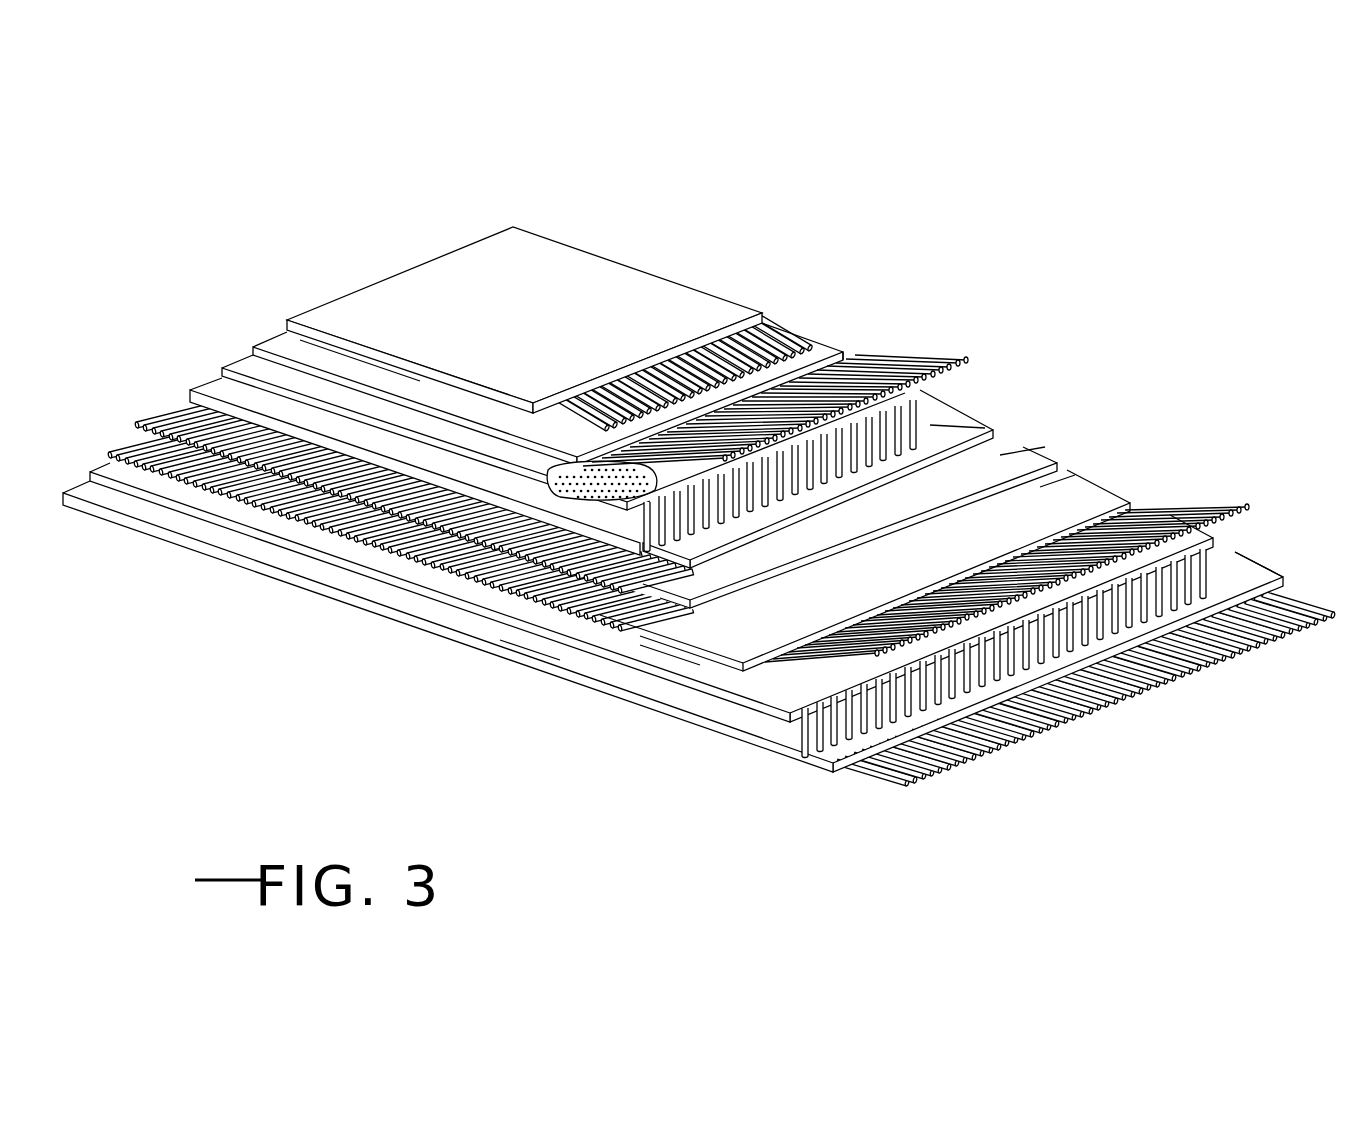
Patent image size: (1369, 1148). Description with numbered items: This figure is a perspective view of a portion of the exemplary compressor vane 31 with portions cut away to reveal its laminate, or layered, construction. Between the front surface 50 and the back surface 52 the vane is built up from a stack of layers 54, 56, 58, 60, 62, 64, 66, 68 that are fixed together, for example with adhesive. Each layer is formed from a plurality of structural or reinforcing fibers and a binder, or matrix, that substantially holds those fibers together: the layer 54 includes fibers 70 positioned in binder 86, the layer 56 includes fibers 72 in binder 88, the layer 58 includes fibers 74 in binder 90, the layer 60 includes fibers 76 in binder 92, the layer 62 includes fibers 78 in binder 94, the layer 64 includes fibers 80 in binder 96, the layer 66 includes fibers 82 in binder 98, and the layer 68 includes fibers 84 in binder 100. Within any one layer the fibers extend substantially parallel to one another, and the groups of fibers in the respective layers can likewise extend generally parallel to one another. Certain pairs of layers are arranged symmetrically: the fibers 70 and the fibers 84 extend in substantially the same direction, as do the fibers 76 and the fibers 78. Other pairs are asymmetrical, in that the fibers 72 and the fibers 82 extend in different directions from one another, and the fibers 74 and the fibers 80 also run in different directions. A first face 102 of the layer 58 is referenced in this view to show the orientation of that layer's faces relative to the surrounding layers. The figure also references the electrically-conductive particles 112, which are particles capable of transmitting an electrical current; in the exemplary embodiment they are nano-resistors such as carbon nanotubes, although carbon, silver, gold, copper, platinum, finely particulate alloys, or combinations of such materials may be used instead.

The compressor vane 31 is at (1085, 150).
The front surface 50 is at (575, 300).
The back surface 52 is at (530, 655).
The layer 54 is at (328, 268).
The layer 56 is at (250, 325).
The layer 58 is at (222, 350).
The layer 60 is at (982, 402).
The layer 62 is at (1055, 442).
The layer 64 is at (1120, 488).
The layer 66 is at (708, 700).
The layer 68 is at (767, 768).
The fibers 70 is at (817, 345).
The fibers 72 is at (887, 350).
The fibers 74 is at (955, 378).
The fibers 76 is at (140, 417).
The fibers 78 is at (112, 450).
The fibers 80 is at (1247, 507).
The fibers 82 is at (1205, 552).
The fibers 84 is at (1300, 635).
The binder 86 is at (714, 313).
The binder 88 is at (827, 352).
The binder 90 is at (370, 400).
The binder 92 is at (1018, 458).
The binder 94 is at (1040, 455).
The binder 96 is at (1067, 483).
The binder 98 is at (660, 650).
The binder 100 is at (1283, 577).
The first face 102 is at (423, 427).
The electrically-conductive particles 112 is at (570, 467).